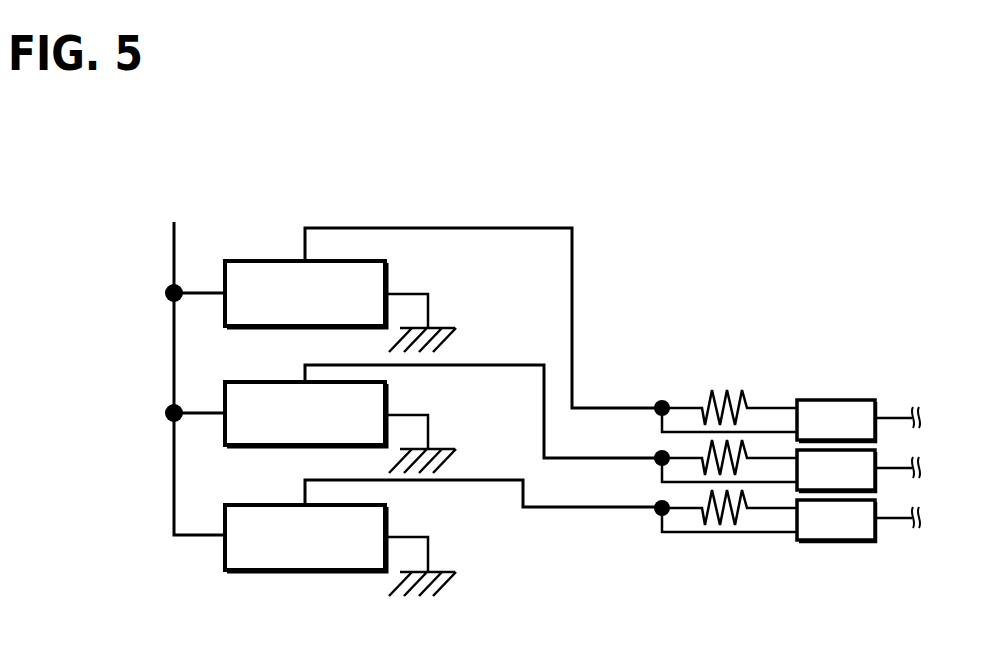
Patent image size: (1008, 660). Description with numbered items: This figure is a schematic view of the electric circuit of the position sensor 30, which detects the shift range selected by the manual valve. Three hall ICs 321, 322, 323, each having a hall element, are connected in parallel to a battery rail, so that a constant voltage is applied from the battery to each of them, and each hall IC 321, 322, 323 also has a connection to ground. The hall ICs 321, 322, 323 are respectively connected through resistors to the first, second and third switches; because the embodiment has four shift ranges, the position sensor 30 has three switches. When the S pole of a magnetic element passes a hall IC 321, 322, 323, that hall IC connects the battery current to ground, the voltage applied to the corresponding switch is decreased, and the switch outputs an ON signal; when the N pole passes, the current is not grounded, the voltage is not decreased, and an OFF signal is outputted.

The position sensor 30 is at (431, 194).
The hall IC 321 is at (268, 259).
The hall IC 322 is at (268, 382).
The hall IC 323 is at (287, 572).